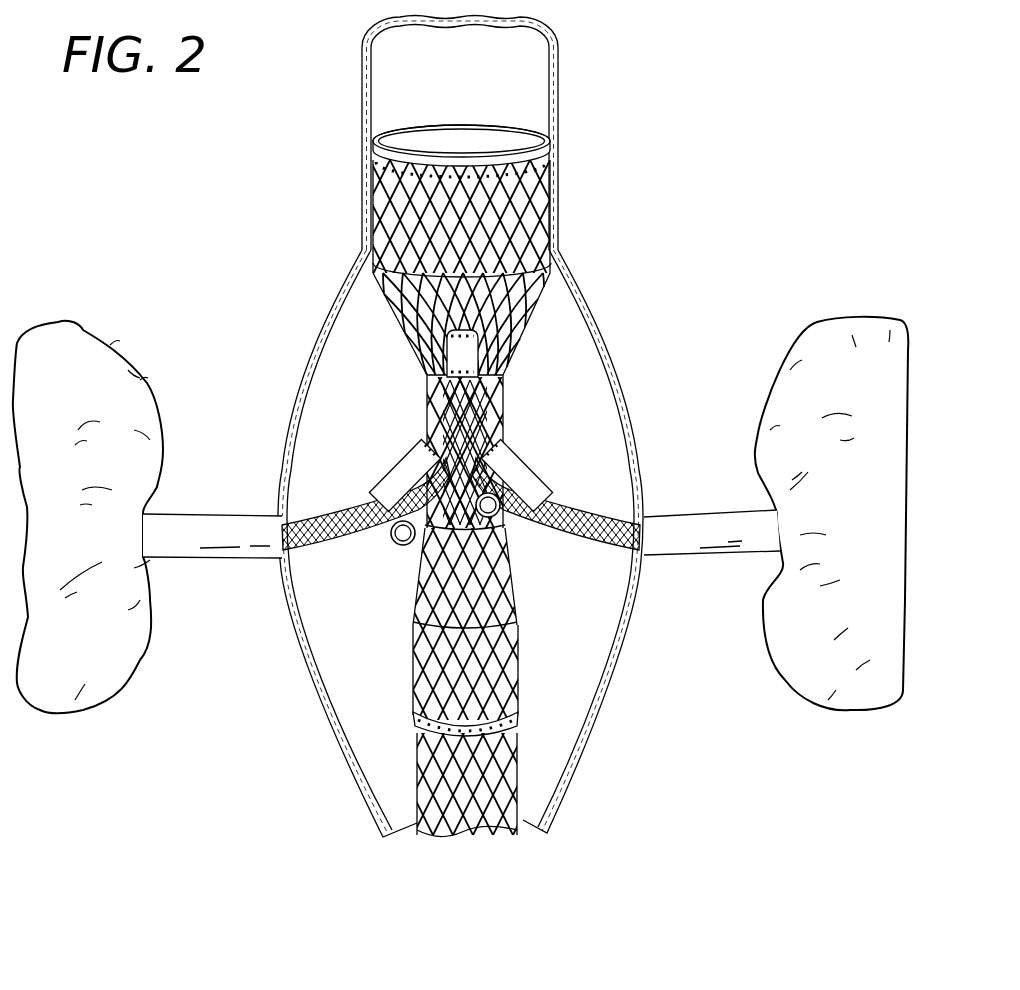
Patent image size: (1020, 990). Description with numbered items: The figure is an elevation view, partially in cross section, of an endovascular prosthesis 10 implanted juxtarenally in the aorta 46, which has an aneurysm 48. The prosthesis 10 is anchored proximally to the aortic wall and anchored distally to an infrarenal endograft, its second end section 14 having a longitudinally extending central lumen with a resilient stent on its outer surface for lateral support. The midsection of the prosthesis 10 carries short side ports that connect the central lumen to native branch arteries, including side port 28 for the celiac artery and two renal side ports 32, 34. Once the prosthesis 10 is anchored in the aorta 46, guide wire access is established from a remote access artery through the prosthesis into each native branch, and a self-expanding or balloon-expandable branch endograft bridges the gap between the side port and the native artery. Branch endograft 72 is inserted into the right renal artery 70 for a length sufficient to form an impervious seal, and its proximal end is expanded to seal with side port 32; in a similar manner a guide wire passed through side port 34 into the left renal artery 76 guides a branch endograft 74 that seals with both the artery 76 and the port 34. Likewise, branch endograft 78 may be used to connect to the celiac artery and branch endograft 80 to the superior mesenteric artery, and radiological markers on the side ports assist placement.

The endovascular prosthesis 10 is at (532, 302).
The second end section 14 is at (518, 682).
The side port 28 is at (470, 348).
The renal side port 32 is at (395, 469).
The renal side port 34 is at (534, 466).
The aorta 46 is at (558, 85).
The aneurysm 48 is at (615, 390).
The right renal artery 70 is at (203, 515).
The branch endograft 72 is at (345, 508).
The right branch graft 74 is at (604, 543).
The left renal artery 76 is at (716, 512).
The branch endograft 78 is at (498, 515).
The branch endograft 80 is at (390, 546).